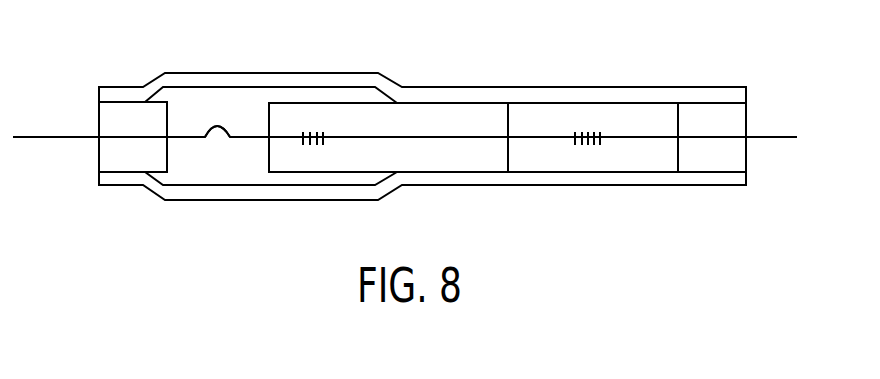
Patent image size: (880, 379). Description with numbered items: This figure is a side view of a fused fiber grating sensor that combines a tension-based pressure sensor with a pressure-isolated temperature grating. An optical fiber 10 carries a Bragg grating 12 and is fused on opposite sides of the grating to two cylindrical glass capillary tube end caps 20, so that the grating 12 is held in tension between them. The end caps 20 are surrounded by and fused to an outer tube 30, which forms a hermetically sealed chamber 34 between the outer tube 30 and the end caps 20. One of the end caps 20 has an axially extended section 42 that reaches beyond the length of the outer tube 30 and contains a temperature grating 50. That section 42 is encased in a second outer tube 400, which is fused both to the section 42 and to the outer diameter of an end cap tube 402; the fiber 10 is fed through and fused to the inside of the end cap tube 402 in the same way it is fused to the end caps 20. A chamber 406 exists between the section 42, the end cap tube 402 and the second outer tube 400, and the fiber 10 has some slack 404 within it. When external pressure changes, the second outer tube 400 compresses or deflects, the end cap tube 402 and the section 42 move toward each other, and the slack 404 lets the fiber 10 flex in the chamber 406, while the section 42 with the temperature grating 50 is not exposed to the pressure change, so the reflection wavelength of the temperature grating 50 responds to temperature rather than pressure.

The optical waveguide 10 is at (60, 140).
The Bragg grating 12 is at (575, 133).
The capillary tube end caps 20 is at (484, 135).
The outer tube 30 is at (530, 95).
The chamber 34 is at (652, 167).
The axially extended section 42 is at (315, 110).
The temperature grating 50 is at (324, 130).
The second outer tube 400 is at (155, 82).
The end cap tube 402 is at (102, 117).
The slack 404 is at (216, 125).
The chamber 406 is at (205, 157).